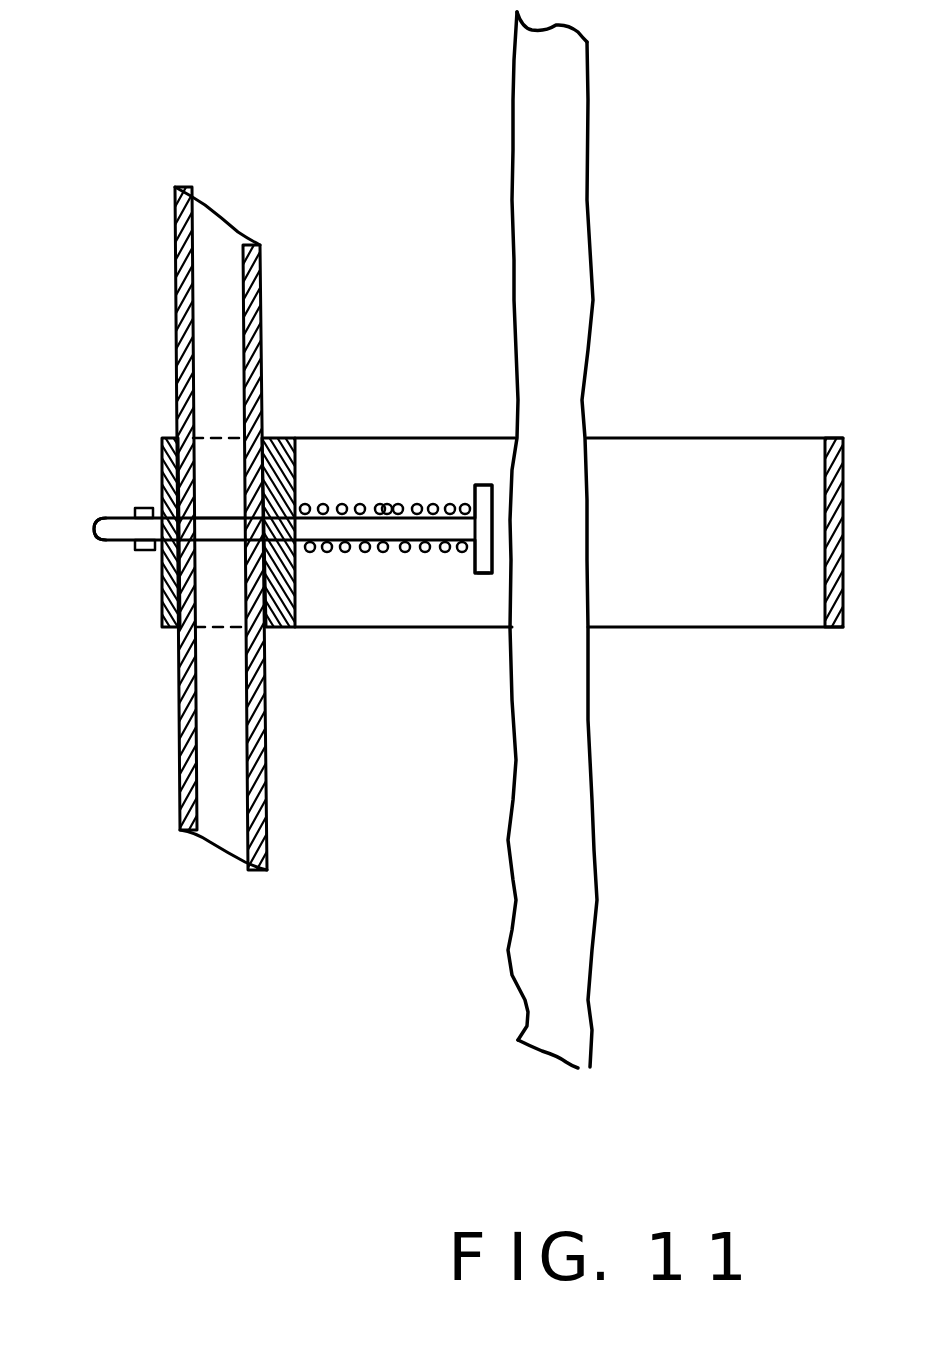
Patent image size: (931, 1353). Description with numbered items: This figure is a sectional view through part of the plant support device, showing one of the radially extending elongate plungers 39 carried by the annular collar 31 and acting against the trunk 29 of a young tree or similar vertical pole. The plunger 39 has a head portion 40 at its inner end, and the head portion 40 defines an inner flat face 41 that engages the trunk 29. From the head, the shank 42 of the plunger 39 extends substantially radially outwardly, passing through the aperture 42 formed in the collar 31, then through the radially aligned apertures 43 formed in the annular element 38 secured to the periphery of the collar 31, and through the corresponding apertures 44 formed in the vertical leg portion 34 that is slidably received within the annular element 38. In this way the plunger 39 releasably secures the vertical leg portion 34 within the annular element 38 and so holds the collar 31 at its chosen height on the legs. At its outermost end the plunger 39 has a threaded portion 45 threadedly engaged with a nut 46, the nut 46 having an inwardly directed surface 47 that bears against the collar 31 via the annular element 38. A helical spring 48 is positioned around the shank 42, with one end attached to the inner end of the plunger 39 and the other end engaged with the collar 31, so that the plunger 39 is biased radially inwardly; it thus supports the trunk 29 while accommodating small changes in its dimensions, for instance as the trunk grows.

The trunk 29 is at (563, 310).
The annular collar 31 is at (728, 455).
The vertical leg portion 34 is at (178, 345).
The annular element 38 is at (158, 462).
The plunger 39 is at (375, 565).
The head portion 40 is at (490, 572).
The inner flat face 41 is at (497, 480).
The shank 42 is at (300, 510).
The apertures 43 is at (250, 545).
The apertures 44 is at (192, 510).
The threaded portion 45 is at (95, 540).
The nut 46 is at (147, 550).
The inwardly directed surface 47 is at (162, 508).
The helical spring 48 is at (387, 503).